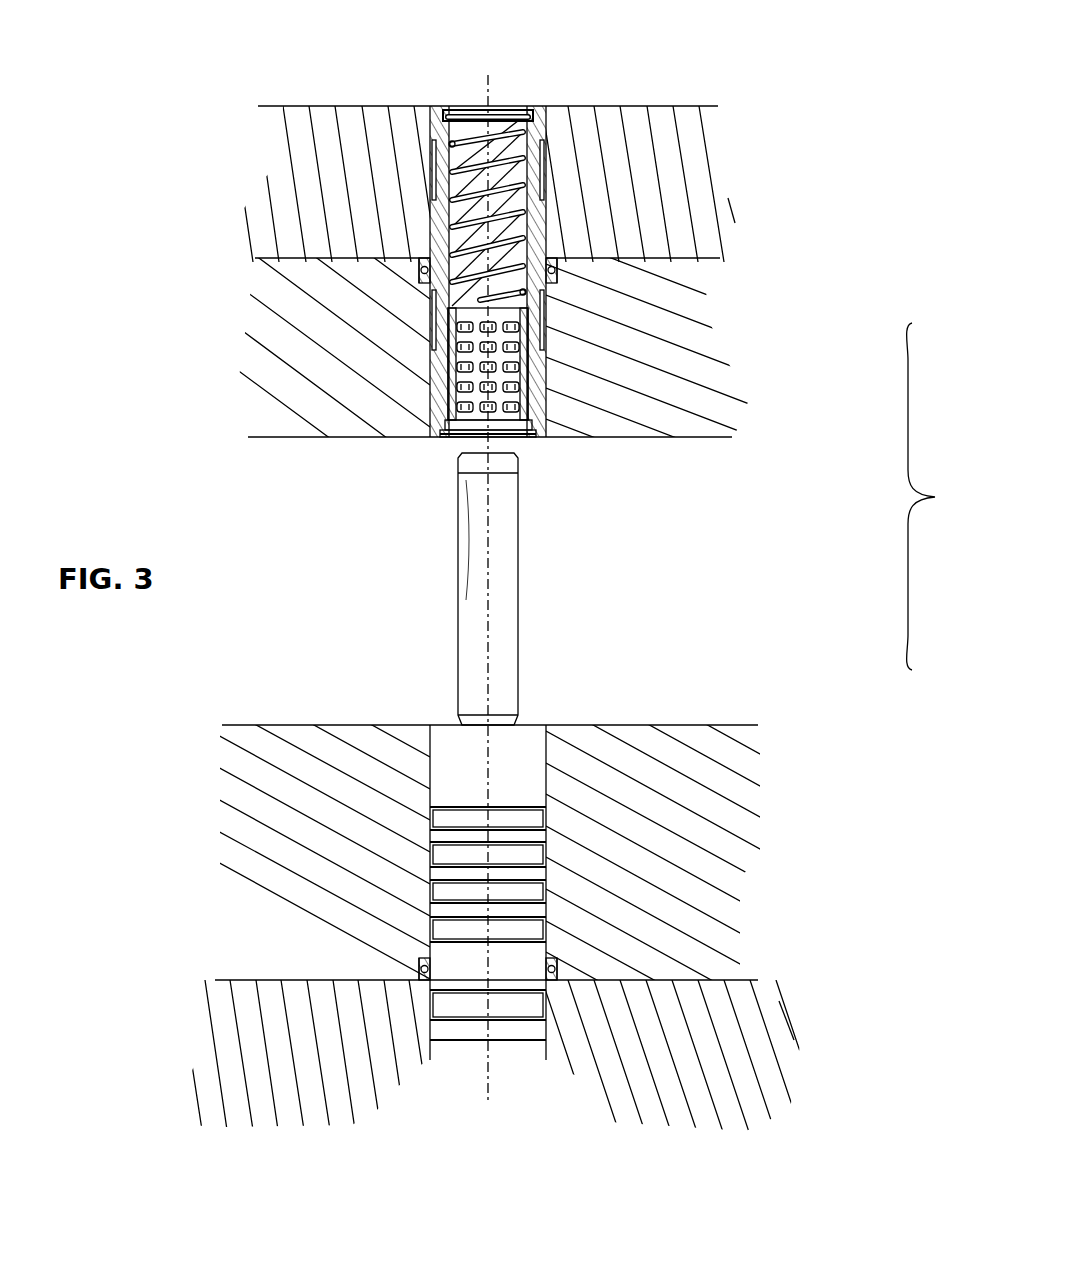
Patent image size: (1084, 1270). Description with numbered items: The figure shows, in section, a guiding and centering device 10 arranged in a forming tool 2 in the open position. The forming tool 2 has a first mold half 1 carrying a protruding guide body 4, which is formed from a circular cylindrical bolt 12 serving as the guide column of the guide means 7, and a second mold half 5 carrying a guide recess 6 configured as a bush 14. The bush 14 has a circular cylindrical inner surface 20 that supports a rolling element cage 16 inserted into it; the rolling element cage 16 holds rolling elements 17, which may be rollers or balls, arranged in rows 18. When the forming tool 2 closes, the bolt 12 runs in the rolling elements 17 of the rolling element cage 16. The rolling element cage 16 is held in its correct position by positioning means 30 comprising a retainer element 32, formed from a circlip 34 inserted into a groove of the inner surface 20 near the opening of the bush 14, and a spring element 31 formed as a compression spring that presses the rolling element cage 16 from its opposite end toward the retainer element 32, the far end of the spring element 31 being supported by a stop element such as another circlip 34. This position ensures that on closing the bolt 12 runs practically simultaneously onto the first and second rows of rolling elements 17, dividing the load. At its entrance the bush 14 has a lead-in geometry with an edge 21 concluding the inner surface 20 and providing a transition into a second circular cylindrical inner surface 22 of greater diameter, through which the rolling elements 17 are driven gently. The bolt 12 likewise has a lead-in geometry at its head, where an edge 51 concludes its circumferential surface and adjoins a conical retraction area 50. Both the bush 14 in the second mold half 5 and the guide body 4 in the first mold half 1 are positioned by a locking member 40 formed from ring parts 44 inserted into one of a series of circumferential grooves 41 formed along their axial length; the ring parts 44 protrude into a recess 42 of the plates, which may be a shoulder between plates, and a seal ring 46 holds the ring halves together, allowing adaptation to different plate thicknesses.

The first mold half 1 is at (785, 805).
The forming tool 2 is at (934, 496).
The guide body 4 is at (530, 683).
The second mold half 5 is at (755, 355).
The guide recess 6 is at (530, 452).
The guide means 7 is at (448, 690).
The guiding and centering device 10 is at (148, 410).
The circular cylindrical bolt 12 is at (530, 603).
The bush 14 is at (543, 107).
The rolling element cage 16 is at (456, 458).
The rolling elements 17 is at (435, 398).
The rows 18 is at (447, 318).
The circular cylindrical inner surface 20 is at (447, 306).
The edge 21 is at (548, 436).
The second circular cylindrical inner surface 22 is at (455, 440).
The positioning means 30 is at (502, 100).
The spring element 31 is at (427, 116).
The retainer element 32 is at (455, 438).
The circlip 34 is at (452, 115).
The locking member 40 is at (553, 256).
The circumferential groove 41 is at (365, 118).
The recess 42 is at (560, 280).
The ring parts 44 is at (420, 278).
The seal ring 46 is at (560, 284).
The conical retraction area 50 is at (505, 470).
The edge 51 is at (510, 530).